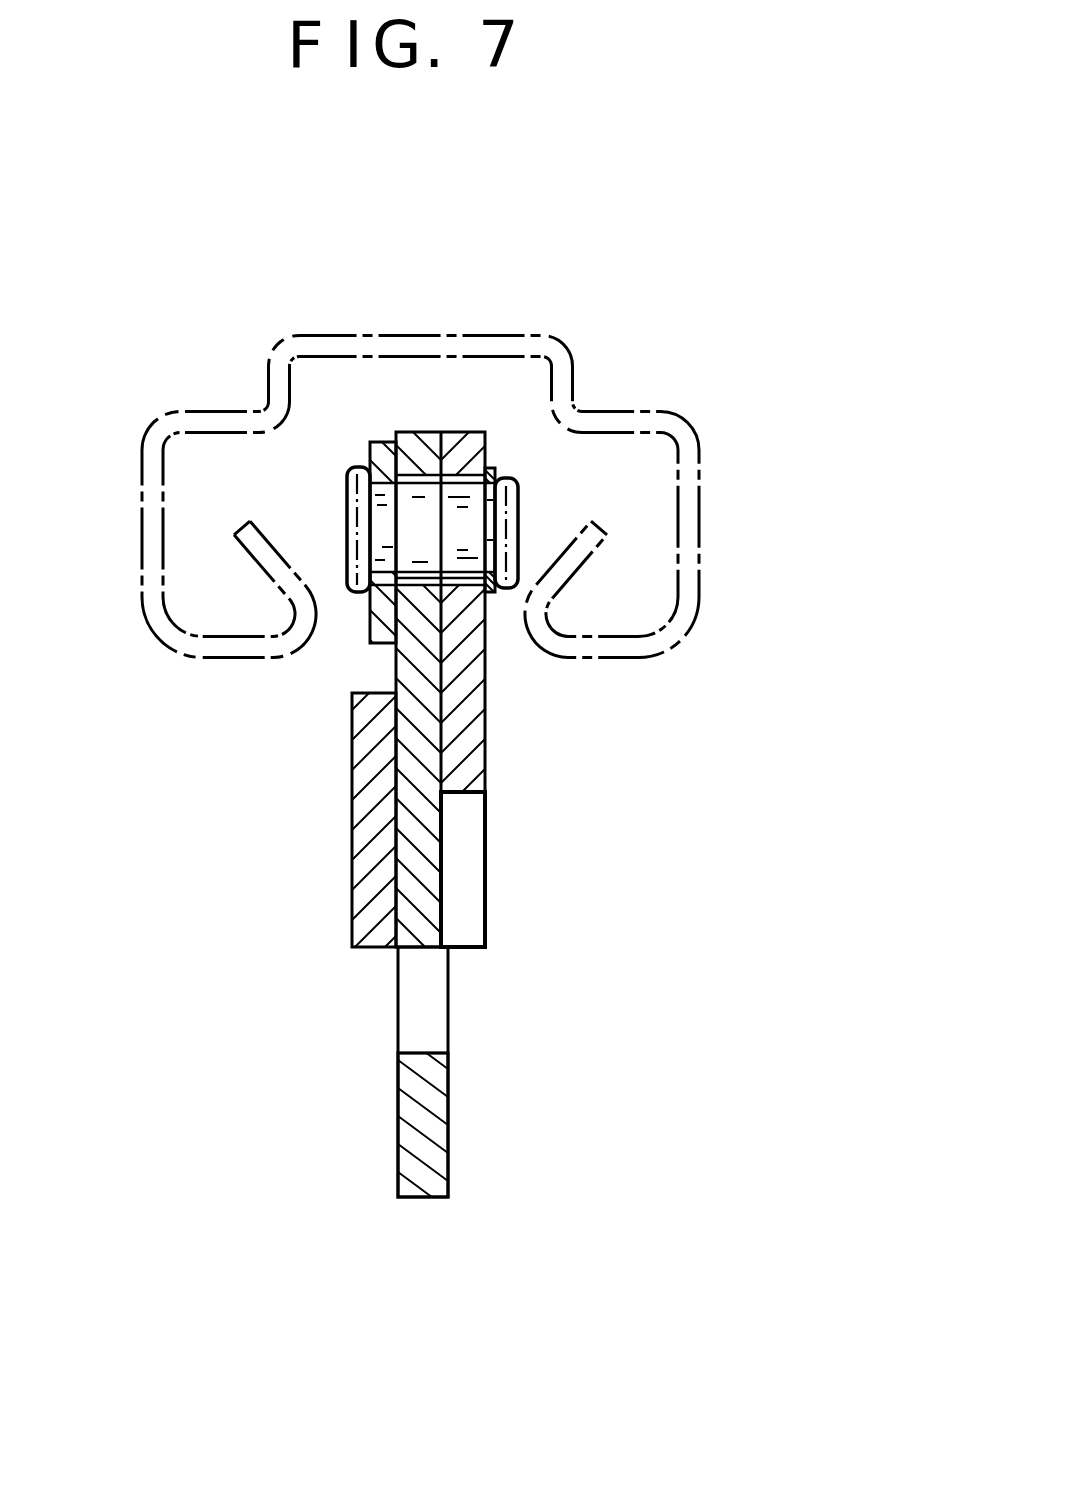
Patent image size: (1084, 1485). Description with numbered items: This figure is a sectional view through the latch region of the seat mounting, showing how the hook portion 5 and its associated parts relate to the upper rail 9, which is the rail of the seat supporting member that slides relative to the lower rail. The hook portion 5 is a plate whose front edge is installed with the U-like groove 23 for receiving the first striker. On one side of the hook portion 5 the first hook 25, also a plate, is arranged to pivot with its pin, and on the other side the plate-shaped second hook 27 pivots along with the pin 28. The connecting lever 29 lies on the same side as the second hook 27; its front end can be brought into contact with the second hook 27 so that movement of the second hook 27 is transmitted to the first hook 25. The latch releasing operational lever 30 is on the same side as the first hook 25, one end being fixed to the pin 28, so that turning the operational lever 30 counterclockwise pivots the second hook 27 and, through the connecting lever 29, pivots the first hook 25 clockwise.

The upper rail 9 is at (699, 492).
The second hook 27 is at (470, 440).
The latch releasing operational lever 30 is at (385, 440).
The pin 28 is at (520, 523).
The first hook 25 is at (363, 843).
The connecting lever 29 is at (480, 887).
The U-like groove 23 is at (420, 1053).
The hook portion 5 is at (425, 1182).